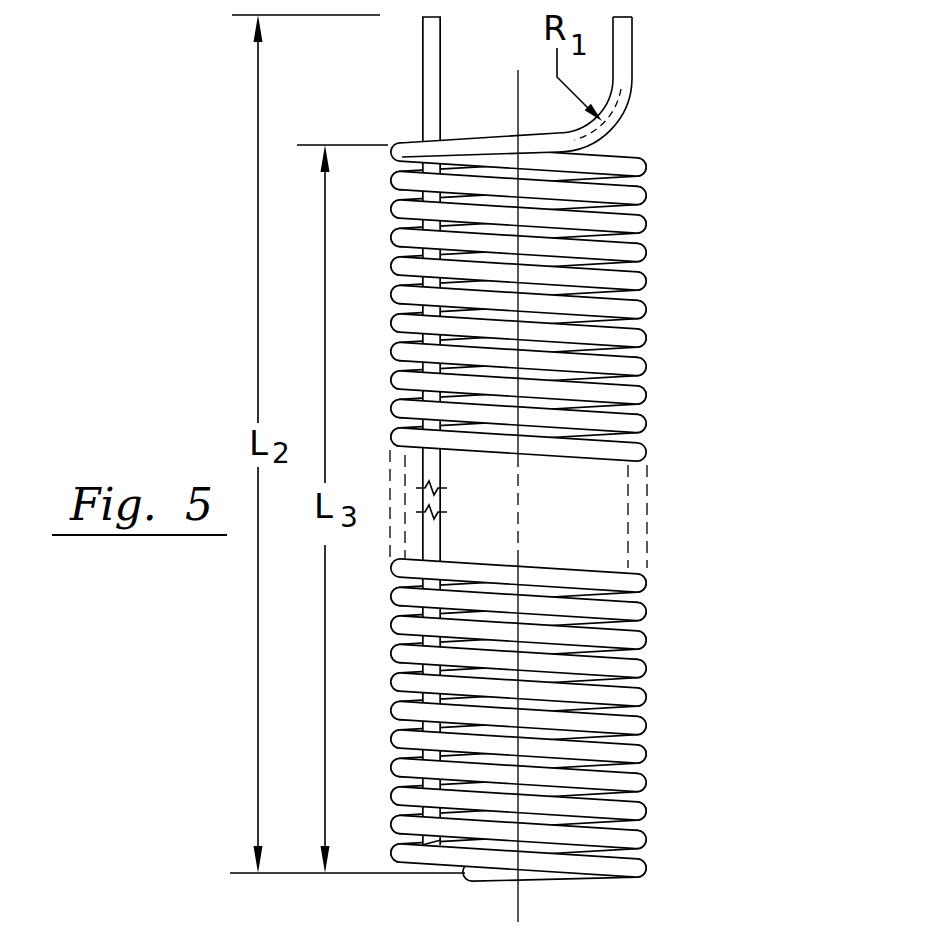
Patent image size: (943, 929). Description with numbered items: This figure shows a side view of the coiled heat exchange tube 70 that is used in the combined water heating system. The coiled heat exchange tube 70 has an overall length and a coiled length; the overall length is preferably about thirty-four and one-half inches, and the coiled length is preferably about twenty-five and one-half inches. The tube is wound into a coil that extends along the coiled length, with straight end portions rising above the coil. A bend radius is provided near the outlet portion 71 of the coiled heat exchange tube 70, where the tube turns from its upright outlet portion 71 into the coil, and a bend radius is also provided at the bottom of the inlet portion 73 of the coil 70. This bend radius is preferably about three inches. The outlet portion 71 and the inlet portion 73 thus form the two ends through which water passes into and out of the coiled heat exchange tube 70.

The coiled heat exchange tube 70 is at (575, 469).
The outlet portion 71 is at (634, 56).
The inlet portion 73 is at (421, 93).